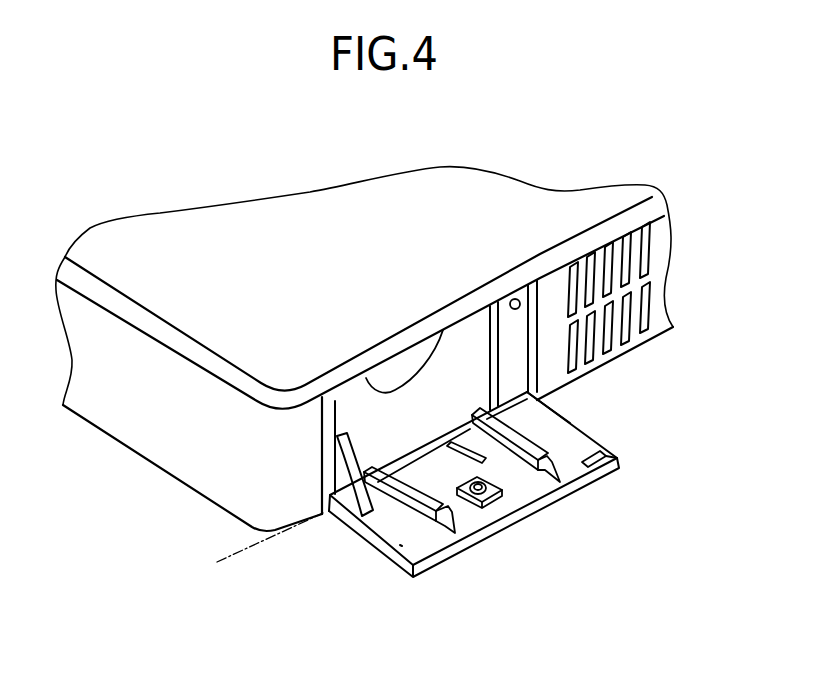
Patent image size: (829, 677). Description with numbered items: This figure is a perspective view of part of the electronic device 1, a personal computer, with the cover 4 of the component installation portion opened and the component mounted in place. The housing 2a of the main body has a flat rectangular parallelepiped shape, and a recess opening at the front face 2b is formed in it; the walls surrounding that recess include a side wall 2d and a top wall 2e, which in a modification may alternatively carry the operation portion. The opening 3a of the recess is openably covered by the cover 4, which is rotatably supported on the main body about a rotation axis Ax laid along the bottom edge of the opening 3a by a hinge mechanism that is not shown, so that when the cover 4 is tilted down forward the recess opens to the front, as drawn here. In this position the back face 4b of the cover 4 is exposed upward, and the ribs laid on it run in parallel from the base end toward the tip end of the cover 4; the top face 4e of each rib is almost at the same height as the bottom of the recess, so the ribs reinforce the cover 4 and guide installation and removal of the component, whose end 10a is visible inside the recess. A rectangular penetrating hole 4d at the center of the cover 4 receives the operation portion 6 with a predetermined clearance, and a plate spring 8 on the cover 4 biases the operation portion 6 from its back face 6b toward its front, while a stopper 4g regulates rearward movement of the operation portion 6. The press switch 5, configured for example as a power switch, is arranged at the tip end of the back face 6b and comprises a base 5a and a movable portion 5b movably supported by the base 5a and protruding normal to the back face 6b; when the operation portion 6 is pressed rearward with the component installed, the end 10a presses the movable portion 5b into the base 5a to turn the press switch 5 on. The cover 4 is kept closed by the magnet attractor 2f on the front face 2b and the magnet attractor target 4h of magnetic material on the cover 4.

The electronic device 1 is at (303, 162).
The housing 2a is at (574, 205).
The front face 2b is at (660, 276).
The side wall 2d is at (120, 415).
The top wall 2e is at (187, 222).
The magnet attractor 2f is at (514, 298).
The opening 3a is at (366, 378).
The end of the component 10a is at (422, 380).
The plate spring 8 is at (514, 434).
The cover 4 is at (323, 524).
The back face 4b is at (408, 503).
The penetrating hole 4d is at (476, 516).
The top face 4e is at (406, 520).
The stopper 4g is at (450, 533).
The magnet attractor target 4h is at (606, 462).
The press switch 5 is at (485, 505).
The base 5a is at (506, 493).
The movable portion 5b is at (492, 499).
The operation portion 6 is at (560, 503).
The back face 6b is at (539, 489).
The rotation axis Ax is at (220, 566).